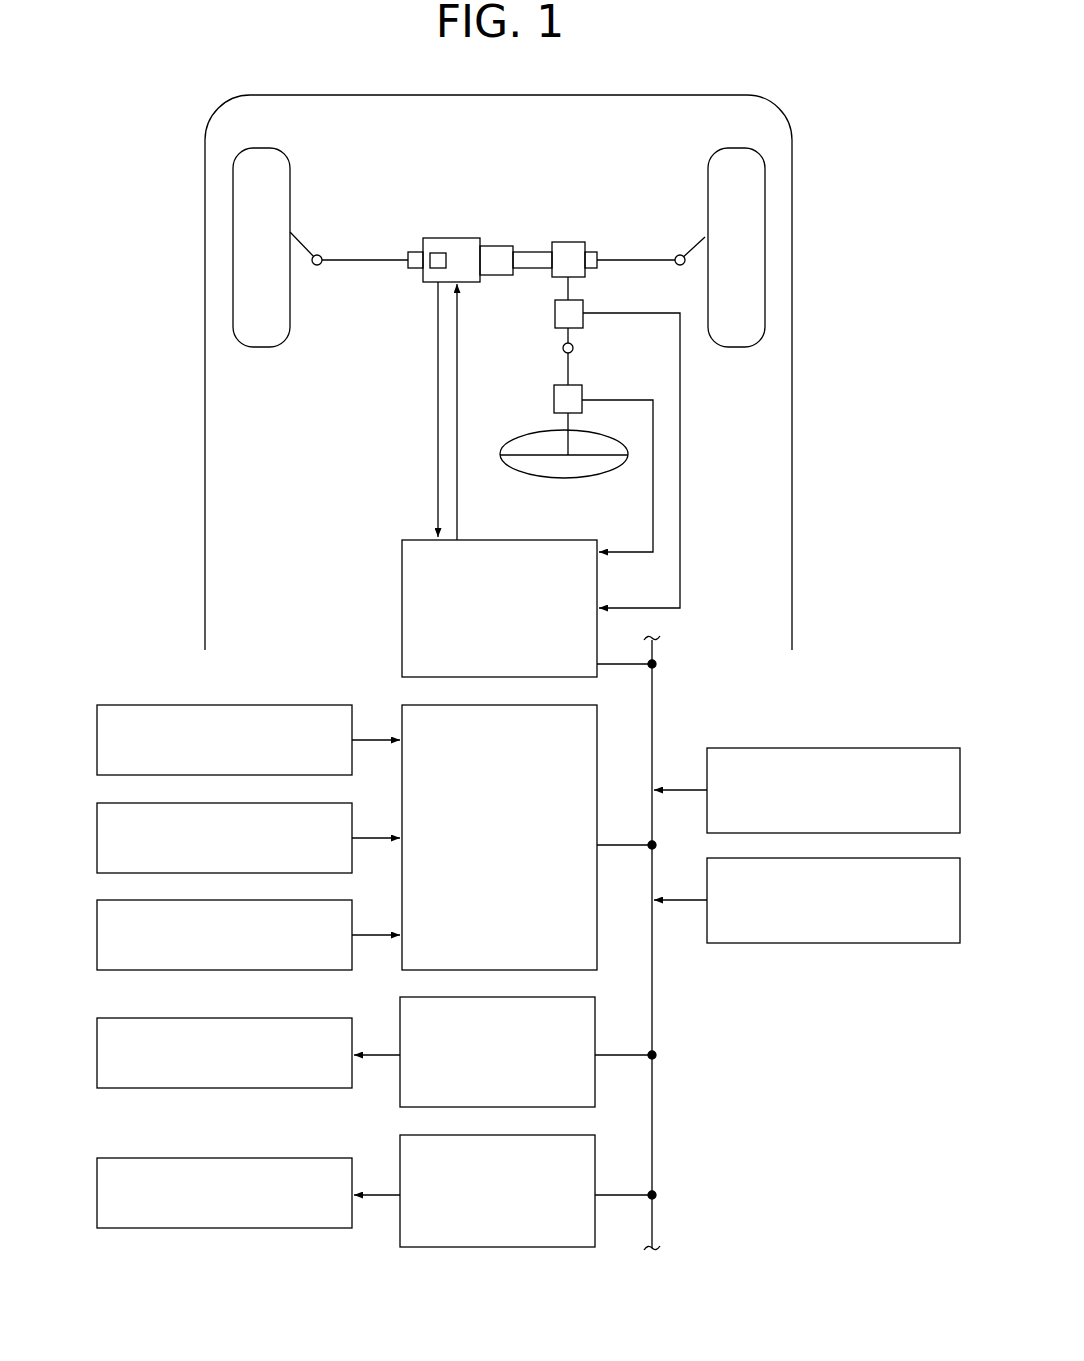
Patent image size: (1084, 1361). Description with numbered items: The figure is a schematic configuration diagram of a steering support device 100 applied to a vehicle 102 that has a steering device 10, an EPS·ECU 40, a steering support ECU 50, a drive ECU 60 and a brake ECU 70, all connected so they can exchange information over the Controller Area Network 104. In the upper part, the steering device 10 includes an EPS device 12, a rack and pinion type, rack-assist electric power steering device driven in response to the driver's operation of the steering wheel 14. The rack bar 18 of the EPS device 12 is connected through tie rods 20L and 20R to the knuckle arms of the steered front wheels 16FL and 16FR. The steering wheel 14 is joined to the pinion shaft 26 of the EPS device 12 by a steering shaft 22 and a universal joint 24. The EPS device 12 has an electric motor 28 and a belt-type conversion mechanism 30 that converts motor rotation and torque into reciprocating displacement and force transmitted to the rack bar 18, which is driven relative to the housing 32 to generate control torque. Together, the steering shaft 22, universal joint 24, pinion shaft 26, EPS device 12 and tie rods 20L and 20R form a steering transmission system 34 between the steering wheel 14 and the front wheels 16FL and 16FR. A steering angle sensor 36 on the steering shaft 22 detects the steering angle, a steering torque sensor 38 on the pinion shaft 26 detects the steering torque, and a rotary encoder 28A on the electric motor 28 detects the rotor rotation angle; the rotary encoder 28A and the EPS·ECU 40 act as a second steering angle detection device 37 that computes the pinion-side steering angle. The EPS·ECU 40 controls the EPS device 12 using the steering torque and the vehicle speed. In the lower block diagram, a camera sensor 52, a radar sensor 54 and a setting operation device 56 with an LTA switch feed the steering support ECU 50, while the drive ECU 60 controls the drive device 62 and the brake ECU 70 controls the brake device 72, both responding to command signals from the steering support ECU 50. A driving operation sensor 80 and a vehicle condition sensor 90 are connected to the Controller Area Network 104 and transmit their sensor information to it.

The steering device 10 is at (545, 212).
The EPS device 12 is at (421, 286).
The steering wheel 14 is at (550, 478).
The front wheel 16FL is at (233, 257).
The front wheel 16FR is at (767, 258).
The rack bar 18 is at (367, 263).
The tie rod 20L is at (302, 240).
The tie rod 20R is at (703, 237).
The steering shaft 22 is at (565, 370).
The universal joint 24 is at (563, 347).
The pinion shaft 26 is at (570, 288).
The electric motor 28 is at (465, 238).
The rotary encoder 28A is at (436, 252).
The belt-type conversion mechanism 30 is at (495, 277).
The housing 32 is at (540, 250).
The steering transmission system 34 is at (579, 338).
The steering angle sensor 36 is at (554, 400).
The second steering angle detection device 37 is at (423, 425).
The steering torque sensor 38 is at (553, 315).
The EPS·ECU 40 is at (499, 608).
The steering support ECU 50 is at (499, 837).
The camera sensor 52 is at (95, 748).
The radar sensor 54 is at (95, 846).
The setting operation device 56 is at (95, 943).
The drive ECU 60 is at (497, 1052).
The drive device 62 is at (95, 1057).
The brake ECU 70 is at (497, 1191).
The brake device 72 is at (95, 1197).
The driving operation sensor 80 is at (818, 748).
The vehicle condition sensor 90 is at (818, 943).
The steering support device 100 is at (162, 173).
The vehicle 102 is at (792, 180).
The Controller Area Network 104 is at (652, 700).